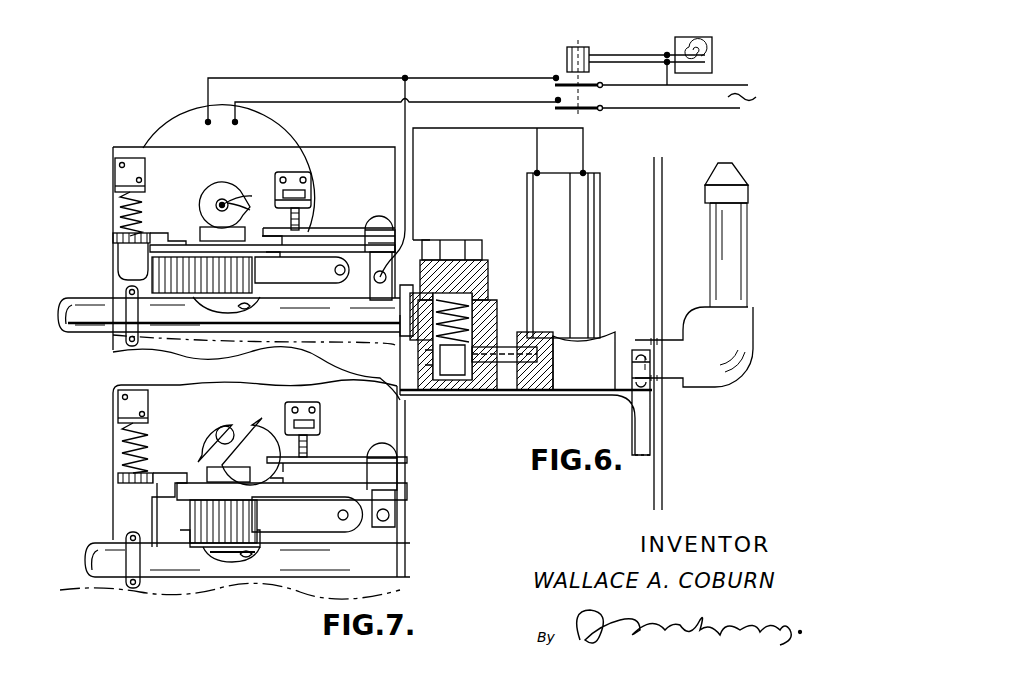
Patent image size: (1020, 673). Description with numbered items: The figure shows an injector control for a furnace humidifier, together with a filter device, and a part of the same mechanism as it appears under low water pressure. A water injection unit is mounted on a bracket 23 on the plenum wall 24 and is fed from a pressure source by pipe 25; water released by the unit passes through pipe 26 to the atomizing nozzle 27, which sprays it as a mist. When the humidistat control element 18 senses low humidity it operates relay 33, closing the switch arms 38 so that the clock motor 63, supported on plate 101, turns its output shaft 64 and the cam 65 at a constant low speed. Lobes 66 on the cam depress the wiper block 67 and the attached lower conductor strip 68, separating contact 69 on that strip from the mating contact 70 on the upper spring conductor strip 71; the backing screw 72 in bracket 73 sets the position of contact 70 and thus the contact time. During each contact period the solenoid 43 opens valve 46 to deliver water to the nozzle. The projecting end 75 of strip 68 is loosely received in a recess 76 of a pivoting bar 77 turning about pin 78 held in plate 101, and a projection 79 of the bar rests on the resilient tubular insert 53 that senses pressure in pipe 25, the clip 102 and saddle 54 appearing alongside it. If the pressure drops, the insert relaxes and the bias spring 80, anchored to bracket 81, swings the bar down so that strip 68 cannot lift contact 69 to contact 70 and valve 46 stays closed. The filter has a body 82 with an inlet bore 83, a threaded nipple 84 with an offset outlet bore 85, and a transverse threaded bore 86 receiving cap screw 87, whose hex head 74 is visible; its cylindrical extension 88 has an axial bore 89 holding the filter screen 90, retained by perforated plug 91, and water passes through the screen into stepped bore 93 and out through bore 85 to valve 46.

In FIG. 6, the humidistat control element 18 is at (712, 45).
In FIG. 6, the bracket 23 is at (598, 388).
In FIG. 6, the plenum wall 24 is at (658, 282).
In FIG. 6, the pipe 25 is at (62, 310).
In FIG. 7, the pipe 25 is at (105, 570).
In FIG. 6, the pipe 26 is at (690, 340).
In FIG. 6, the atomizing nozzle 27 is at (710, 185).
In FIG. 6, the relay 33 is at (566, 57).
In FIG. 6, the switch arms 38 is at (600, 108).
In FIG. 6, the solenoid 43 is at (597, 255).
In FIG. 6, the valve 46 is at (578, 378).
In FIG. 6, the resilient tubular insert 53 is at (218, 306).
In FIG. 7, the resilient tubular insert 53 is at (256, 560).
In FIG. 6, the pivot 54 is at (245, 308).
In FIG. 7, the pivot 54 is at (210, 562).
In FIG. 6, the clock motor 63 is at (183, 121).
In FIG. 6, the output shaft 64 is at (244, 204).
In FIG. 6, the cam 65 is at (225, 200).
In FIG. 6, the lobes 66 is at (203, 192).
In FIG. 6, the wiper block 67 is at (214, 200).
In FIG. 6, the lower conductor strip 68 is at (290, 240).
In FIG. 6, the contact 69 is at (335, 300).
In FIG. 7, the contact 69 is at (288, 492).
In FIG. 6, the contact 70 is at (272, 244).
In FIG. 7, the contact 70 is at (278, 462).
In FIG. 6, the upper spring conductor strip 71 is at (358, 225).
In FIG. 6, the backing screw 72 is at (312, 185).
In FIG. 6, the bracket 73 is at (308, 200).
In FIG. 6, the bolt head 74 is at (420, 240).
In FIG. 6, the projecting end 75 is at (168, 250).
In FIG. 6, the recess 76 is at (165, 238).
In FIG. 7, the recess 76 is at (176, 492).
In FIG. 6, the pivoting bar 77 is at (116, 240).
In FIG. 7, the pivoting bar 77 is at (235, 522).
In FIG. 6, the pin 78 is at (358, 288).
In FIG. 6, the projection 79 is at (190, 260).
In FIG. 7, the projection 79 is at (205, 541).
In FIG. 6, the bias spring 80 is at (122, 212).
In FIG. 7, the bias spring 80 is at (130, 435).
In FIG. 6, the bracket 81 is at (118, 175).
In FIG. 7, the bracket 81 is at (122, 406).
In FIG. 6, the body 82 is at (480, 270).
In FIG. 6, the inlet pipe-receiving bore 83 is at (410, 336).
In FIG. 6, the threaded projecting nipple 84 is at (524, 385).
In FIG. 6, the offset outlet bore 85 is at (510, 355).
In FIG. 6, the threaded screen-receiving bore 86 is at (478, 250).
In FIG. 6, the cap screw 87 is at (448, 258).
In FIG. 6, the axial cylindrical extension 88 is at (465, 285).
In FIG. 6, the axial open-ended bore 89 is at (500, 345).
In FIG. 6, the filter screen 90 is at (410, 346).
In FIG. 6, the perforated plug 91 is at (468, 385).
In FIG. 6, the stepped bore 93 is at (450, 380).
In FIG. 6, the plate 101 is at (382, 158).
In FIG. 6, the clip 102 is at (120, 300).
In FIG. 7, the clip 102 is at (133, 560).